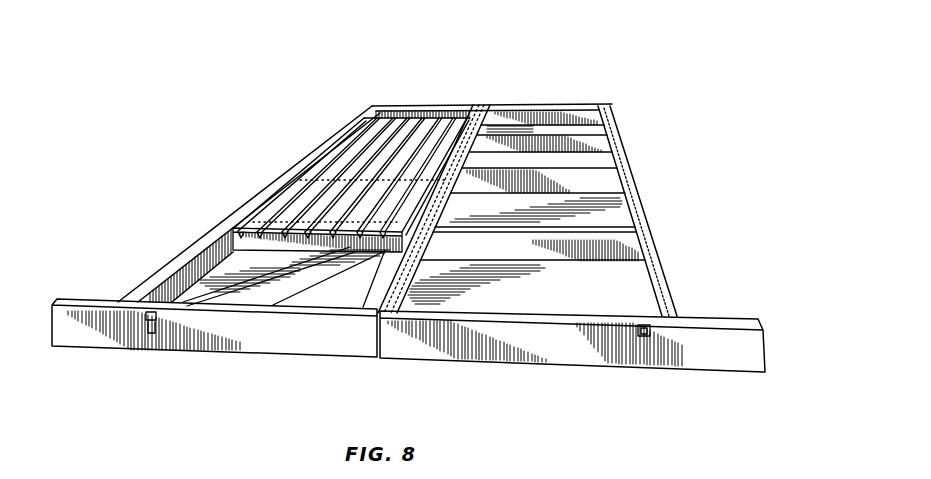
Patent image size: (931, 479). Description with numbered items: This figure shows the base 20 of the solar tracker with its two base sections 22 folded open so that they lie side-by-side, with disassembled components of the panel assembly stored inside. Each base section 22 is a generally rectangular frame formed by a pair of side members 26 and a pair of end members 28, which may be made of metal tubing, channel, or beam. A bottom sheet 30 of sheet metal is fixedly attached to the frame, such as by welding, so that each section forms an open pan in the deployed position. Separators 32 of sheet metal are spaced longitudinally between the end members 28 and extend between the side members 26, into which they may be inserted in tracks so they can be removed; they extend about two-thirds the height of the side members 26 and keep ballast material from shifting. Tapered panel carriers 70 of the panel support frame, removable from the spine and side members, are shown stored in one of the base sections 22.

The base 20 is at (523, 48).
The base section 22 is at (625, 145).
The side member 26 is at (650, 235).
The end member 28 is at (422, 105).
The bottom sheet 30 is at (628, 292).
The separator 32 is at (575, 185).
The panel carrier 70 is at (330, 158).